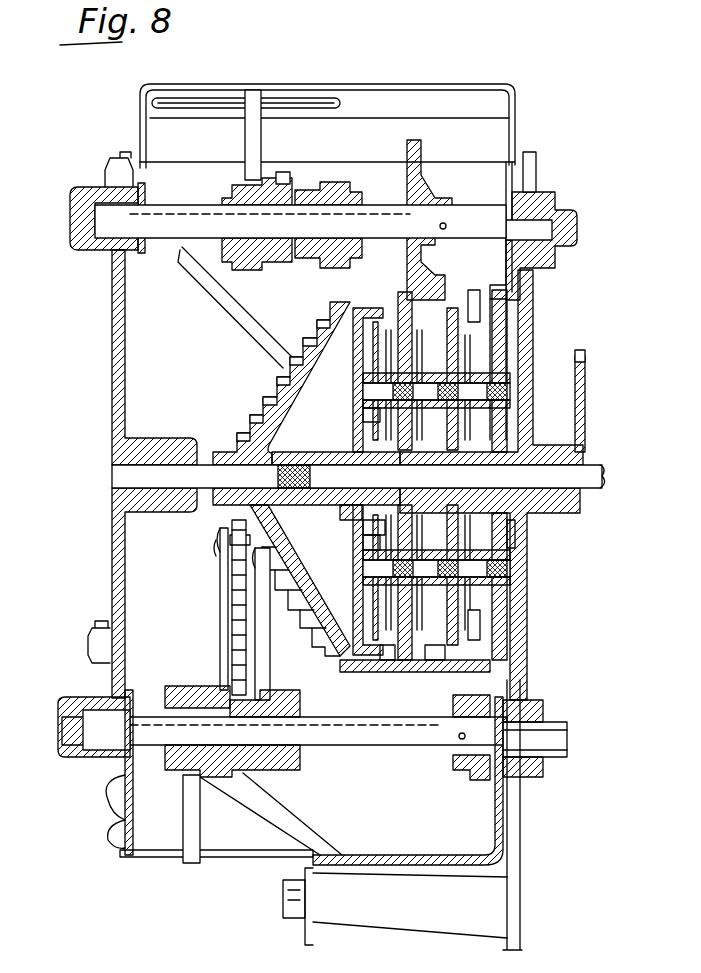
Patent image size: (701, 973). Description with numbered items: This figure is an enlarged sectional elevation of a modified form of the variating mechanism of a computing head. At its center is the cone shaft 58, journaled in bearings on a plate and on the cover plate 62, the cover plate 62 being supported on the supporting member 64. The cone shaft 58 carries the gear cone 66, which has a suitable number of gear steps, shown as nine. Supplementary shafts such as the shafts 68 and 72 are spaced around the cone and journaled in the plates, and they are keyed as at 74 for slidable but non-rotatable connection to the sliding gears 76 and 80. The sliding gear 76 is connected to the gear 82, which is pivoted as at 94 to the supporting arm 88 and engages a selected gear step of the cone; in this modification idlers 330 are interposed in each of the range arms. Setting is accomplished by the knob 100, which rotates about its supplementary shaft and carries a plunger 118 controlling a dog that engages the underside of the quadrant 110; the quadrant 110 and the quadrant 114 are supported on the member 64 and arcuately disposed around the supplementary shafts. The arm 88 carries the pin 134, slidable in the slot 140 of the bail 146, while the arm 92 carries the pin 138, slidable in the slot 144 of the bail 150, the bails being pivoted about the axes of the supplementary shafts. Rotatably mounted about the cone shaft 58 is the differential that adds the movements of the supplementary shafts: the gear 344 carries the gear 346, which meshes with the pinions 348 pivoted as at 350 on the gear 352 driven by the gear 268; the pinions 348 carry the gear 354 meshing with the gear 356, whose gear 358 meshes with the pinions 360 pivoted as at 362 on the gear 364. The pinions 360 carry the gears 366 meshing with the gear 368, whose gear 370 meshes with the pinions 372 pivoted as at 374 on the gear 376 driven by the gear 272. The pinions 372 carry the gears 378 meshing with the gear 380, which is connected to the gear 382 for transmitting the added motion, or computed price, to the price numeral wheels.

The bail 150 is at (352, 92).
The slot 144 is at (232, 98).
The pin 138 is at (254, 108).
The cover plate 62 is at (111, 331).
The supplementary shaft 72 is at (465, 215).
The supporting member 64 is at (535, 160).
The gear 272 is at (425, 162).
The sliding gear 80 is at (292, 178).
The supporting arm 92 is at (326, 180).
The key 74 is at (174, 212).
The quadrant 114 is at (210, 294).
The gear cone 66 is at (262, 405).
The cone shaft 58 is at (310, 458).
The gear 358 is at (360, 454).
The gear 376 is at (506, 290).
The gear 382 is at (586, 414).
The pinion 348 is at (370, 330).
The pinion 360 is at (425, 320).
The gear 366 is at (433, 370).
The pinion 372 is at (472, 300).
The pivot 350 is at (385, 391).
The pivot 374 is at (507, 392).
The gear 378 is at (482, 372).
The gear 354 is at (385, 376).
The pivot 362 is at (368, 412).
The gear 380 is at (516, 540).
The gear 346 is at (355, 518).
The gear 356 is at (380, 535).
The gear 344 is at (365, 672).
The gear 352 is at (392, 662).
The gear 364 is at (437, 690).
The gear 368 is at (416, 467).
The gear 370 is at (470, 468).
The supporting arm 88 is at (222, 580).
The pivot 94 is at (218, 546).
The gear 82 is at (230, 538).
The idler 330 is at (232, 625).
The sliding gear 76 is at (222, 688).
The supplementary shaft 68 is at (312, 748).
The gear 268 is at (468, 768).
The bail 146 is at (378, 856).
The quadrant 110 is at (275, 855).
The slot 140 is at (232, 858).
The pin 134 is at (183, 860).
The knob 100 is at (108, 792).
The plunger 118 is at (105, 826).